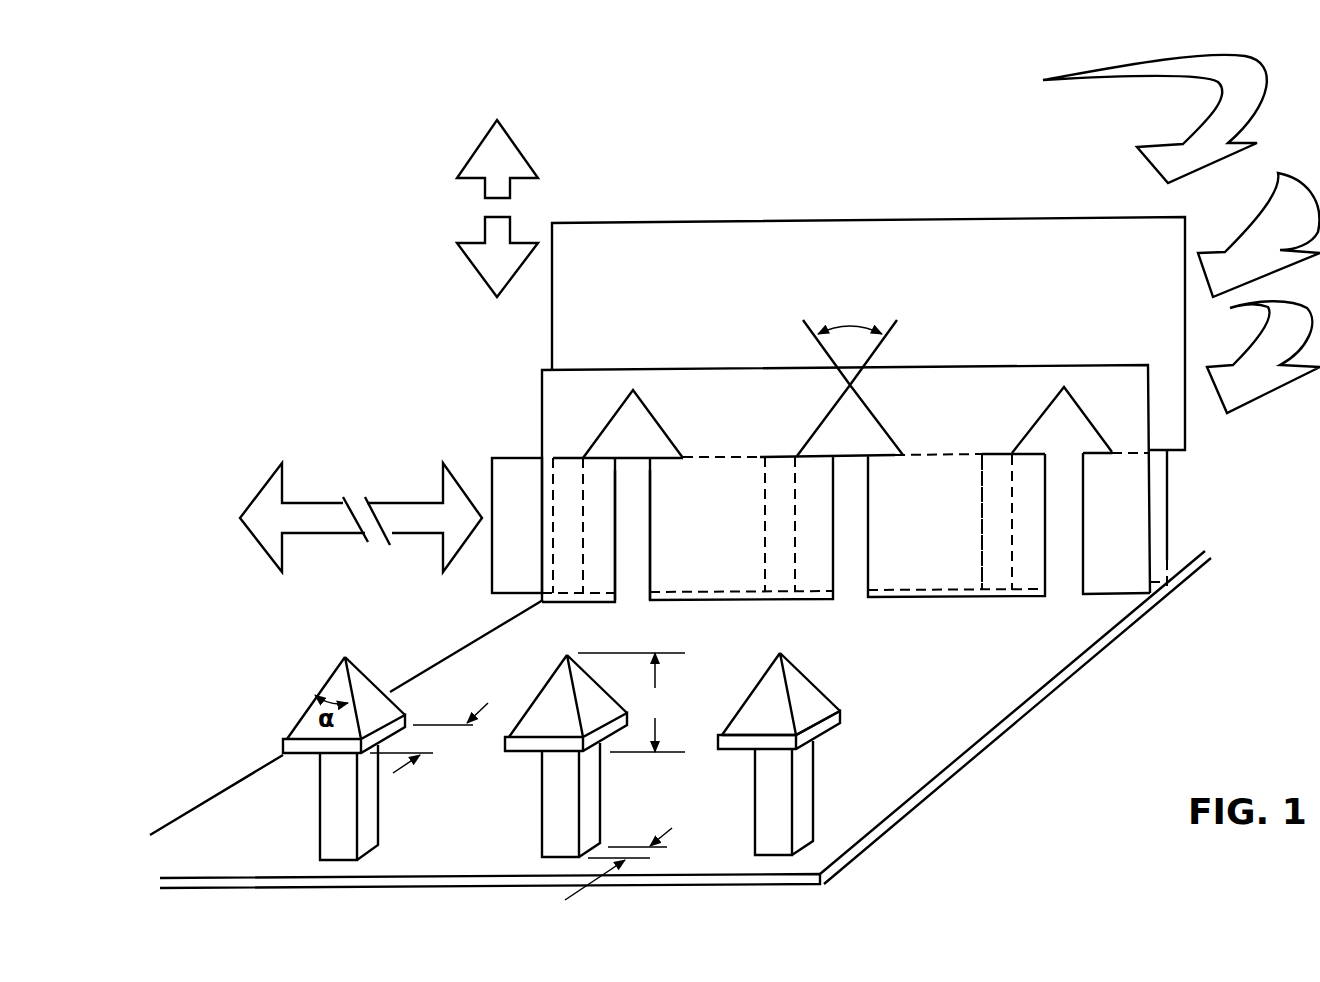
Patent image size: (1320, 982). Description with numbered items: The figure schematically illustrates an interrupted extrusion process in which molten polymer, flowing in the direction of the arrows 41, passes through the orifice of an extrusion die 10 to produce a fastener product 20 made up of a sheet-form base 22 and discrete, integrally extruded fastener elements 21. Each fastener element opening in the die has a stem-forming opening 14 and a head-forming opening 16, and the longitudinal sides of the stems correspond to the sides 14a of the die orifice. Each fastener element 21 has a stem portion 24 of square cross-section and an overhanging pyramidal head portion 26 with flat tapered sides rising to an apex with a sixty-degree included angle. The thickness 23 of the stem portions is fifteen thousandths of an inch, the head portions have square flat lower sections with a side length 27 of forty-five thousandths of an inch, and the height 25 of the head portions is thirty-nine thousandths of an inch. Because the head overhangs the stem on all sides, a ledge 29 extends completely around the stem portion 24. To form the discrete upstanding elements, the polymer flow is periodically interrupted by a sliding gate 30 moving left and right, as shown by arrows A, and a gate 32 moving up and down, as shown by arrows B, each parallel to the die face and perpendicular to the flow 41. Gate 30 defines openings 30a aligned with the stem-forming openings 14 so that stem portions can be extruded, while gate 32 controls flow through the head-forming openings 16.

The extrusion die 10 is at (1133, 569).
The stem-forming opening 14 is at (625, 553).
The sides of the die orifice 14a is at (650, 522).
The head-forming opening 16 is at (627, 415).
The fastener product 20 is at (680, 719).
The fastener elements 21 is at (599, 775).
The sheet-form base 22 is at (1037, 705).
The thickness of stem portions 23 is at (634, 850).
The stem portion 24 is at (833, 823).
The height of head portions 25 is at (631, 702).
The head portion 26 is at (819, 690).
The side length 27 is at (429, 738).
The ledge 29 is at (802, 742).
The sliding gate 30 is at (512, 487).
The openings of gate 30a is at (992, 492).
The gate 32 is at (598, 255).
The flow arrows 41 is at (1140, 162).
The arrows A is at (398, 500).
The arrows B is at (483, 229).